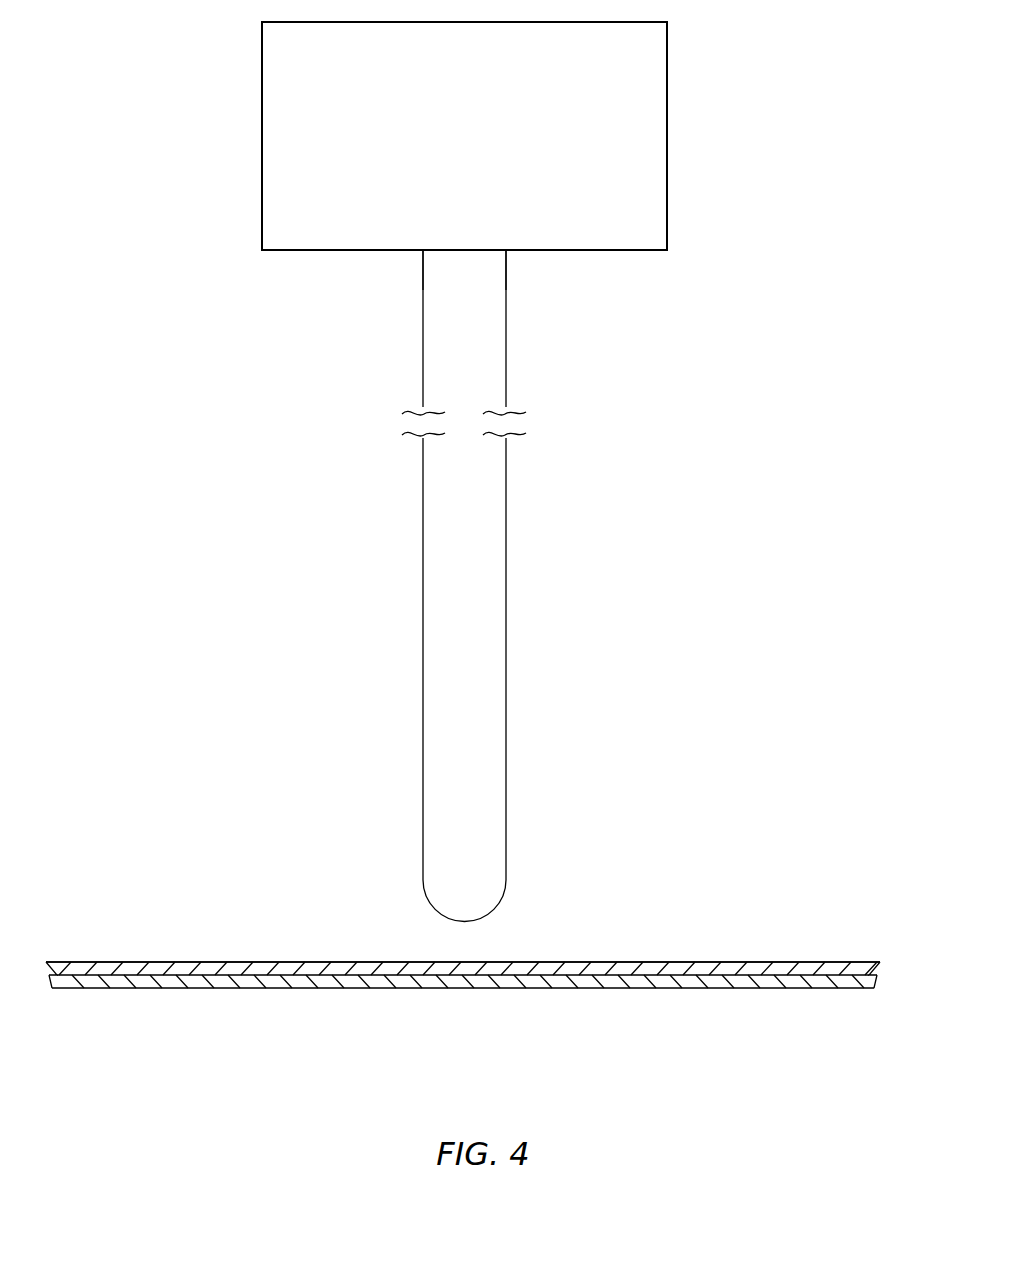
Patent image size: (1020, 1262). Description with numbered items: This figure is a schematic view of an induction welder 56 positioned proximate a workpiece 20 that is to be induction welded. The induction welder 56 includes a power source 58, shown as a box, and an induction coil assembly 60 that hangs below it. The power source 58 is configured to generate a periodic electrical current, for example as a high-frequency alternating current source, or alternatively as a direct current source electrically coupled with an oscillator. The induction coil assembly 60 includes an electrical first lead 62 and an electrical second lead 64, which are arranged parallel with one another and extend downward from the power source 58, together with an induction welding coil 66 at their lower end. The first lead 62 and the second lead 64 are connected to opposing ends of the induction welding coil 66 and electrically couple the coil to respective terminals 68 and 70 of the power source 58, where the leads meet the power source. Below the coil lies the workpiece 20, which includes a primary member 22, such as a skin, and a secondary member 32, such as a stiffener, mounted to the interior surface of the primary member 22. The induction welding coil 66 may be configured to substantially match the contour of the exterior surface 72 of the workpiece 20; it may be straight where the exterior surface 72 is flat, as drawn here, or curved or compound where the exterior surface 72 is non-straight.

The workpiece 20 is at (848, 936).
The primary member 22 is at (75, 968).
The secondary member 32 is at (90, 983).
The induction welder 56 is at (788, 133).
The power source 58 is at (667, 132).
The induction coil assembly 60 is at (580, 572).
The first lead 62 is at (423, 478).
The second lead 64 is at (506, 478).
The induction welding coil 66 is at (512, 917).
The terminal 68 is at (412, 260).
The terminal 70 is at (516, 260).
The exterior surface 72 is at (343, 962).